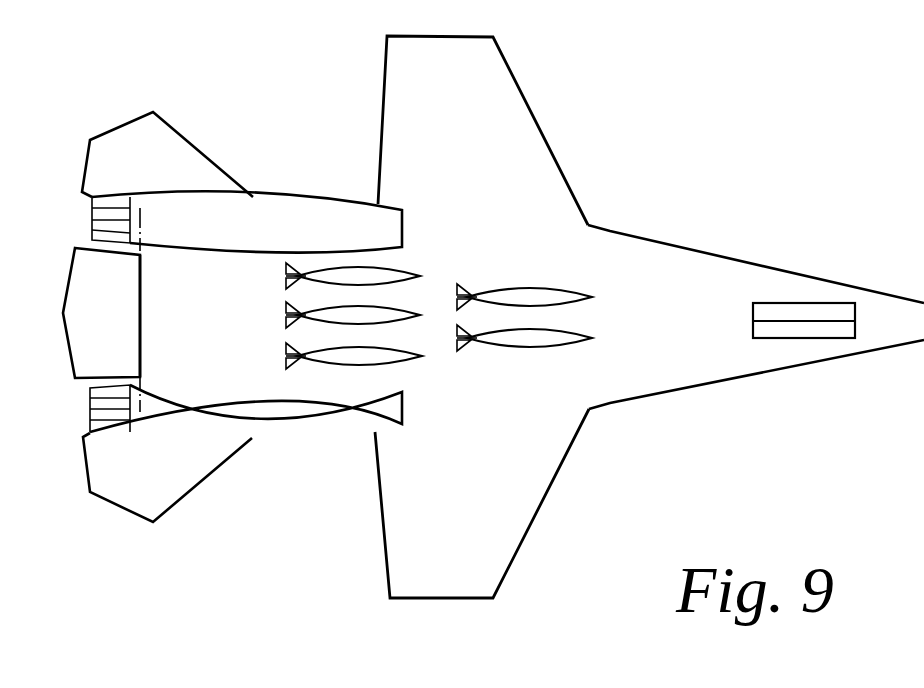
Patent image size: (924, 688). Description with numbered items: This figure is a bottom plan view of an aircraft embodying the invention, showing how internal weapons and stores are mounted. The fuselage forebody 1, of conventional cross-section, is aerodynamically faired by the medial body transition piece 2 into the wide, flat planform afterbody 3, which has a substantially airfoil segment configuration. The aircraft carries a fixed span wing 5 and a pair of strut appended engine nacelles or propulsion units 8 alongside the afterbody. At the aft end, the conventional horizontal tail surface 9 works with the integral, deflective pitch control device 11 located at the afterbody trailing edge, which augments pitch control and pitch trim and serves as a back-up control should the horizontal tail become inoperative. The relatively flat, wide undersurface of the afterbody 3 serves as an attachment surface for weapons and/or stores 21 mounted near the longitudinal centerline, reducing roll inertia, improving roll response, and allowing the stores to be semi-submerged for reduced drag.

The forebody 1 is at (735, 219).
The medial body transition piece 2 is at (620, 256).
The afterbody 3 is at (214, 326).
The fixed span wing 5 is at (471, 508).
The propulsion unit 8 is at (238, 236).
The horizontal tail surface 9 is at (154, 168).
The pitch control device 11 is at (117, 324).
The weapons and/or stores 21 is at (410, 354).